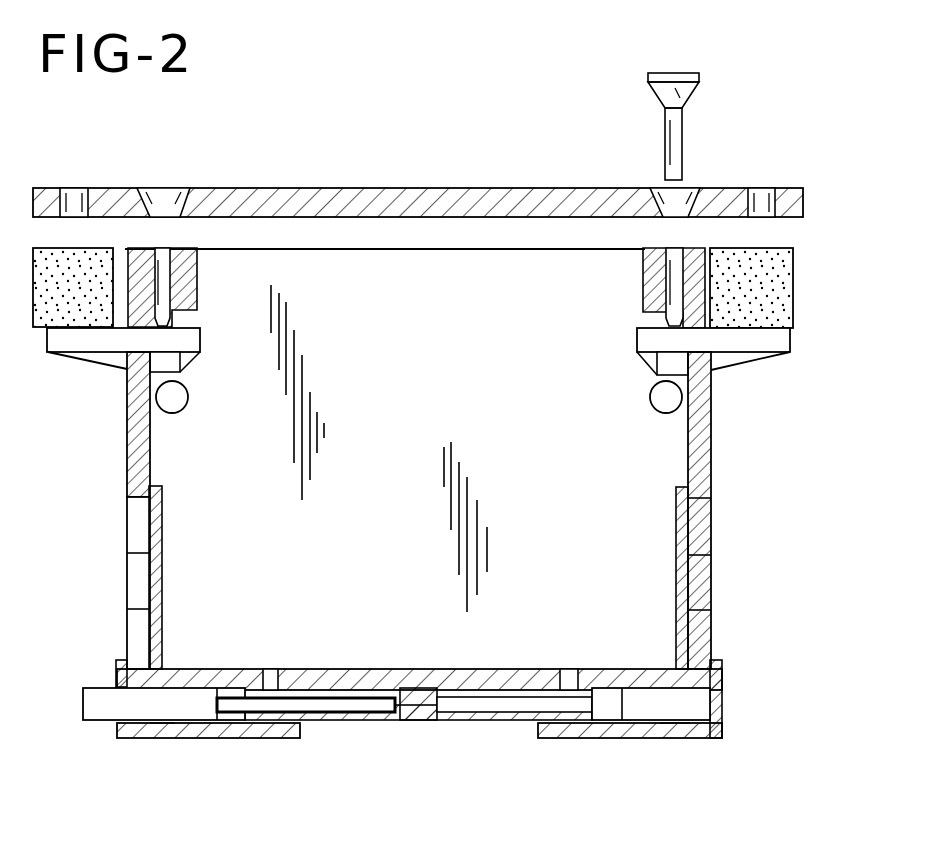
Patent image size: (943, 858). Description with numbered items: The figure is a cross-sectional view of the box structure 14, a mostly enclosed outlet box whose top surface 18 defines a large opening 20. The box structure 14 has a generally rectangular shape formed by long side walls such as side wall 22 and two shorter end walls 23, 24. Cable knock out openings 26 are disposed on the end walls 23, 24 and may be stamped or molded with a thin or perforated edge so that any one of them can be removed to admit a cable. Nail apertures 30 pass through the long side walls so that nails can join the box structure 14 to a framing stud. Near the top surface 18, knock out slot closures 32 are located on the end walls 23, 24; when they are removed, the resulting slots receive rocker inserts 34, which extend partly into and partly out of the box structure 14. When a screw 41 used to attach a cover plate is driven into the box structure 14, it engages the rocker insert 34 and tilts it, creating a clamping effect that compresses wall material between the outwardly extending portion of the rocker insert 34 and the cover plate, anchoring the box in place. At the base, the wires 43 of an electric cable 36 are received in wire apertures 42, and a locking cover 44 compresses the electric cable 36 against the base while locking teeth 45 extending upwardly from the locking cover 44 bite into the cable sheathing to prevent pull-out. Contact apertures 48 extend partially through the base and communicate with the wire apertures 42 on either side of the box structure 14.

The box structure 14 is at (738, 459).
The top surface 18 is at (200, 250).
The large opening 20 is at (410, 249).
The long side wall 22 is at (222, 441).
The end wall 23 is at (127, 402).
The end wall 24 is at (712, 487).
The cable knock out opening 26 is at (712, 517).
The nail aperture 30 is at (667, 397).
The knock out slot closure 32 is at (123, 312).
The rocker insert 34 is at (758, 342).
The electric cable 36 is at (97, 710).
The screw 41 is at (683, 138).
The wire aperture 42 is at (487, 705).
The wire 43 is at (232, 715).
The locking cover 44 is at (283, 738).
The locking teeth 45 is at (162, 730).
The contact aperture 48 is at (270, 683).